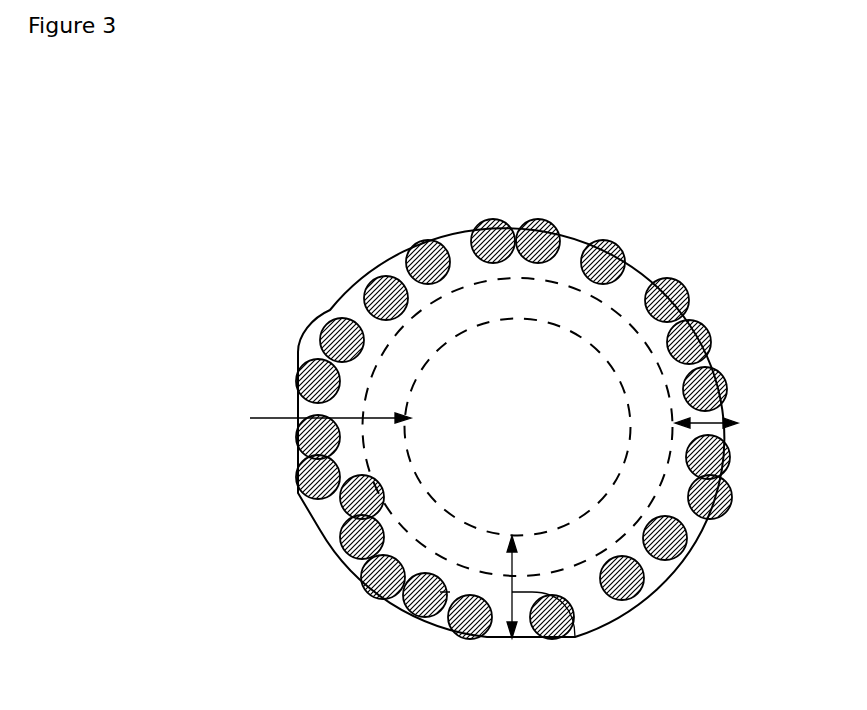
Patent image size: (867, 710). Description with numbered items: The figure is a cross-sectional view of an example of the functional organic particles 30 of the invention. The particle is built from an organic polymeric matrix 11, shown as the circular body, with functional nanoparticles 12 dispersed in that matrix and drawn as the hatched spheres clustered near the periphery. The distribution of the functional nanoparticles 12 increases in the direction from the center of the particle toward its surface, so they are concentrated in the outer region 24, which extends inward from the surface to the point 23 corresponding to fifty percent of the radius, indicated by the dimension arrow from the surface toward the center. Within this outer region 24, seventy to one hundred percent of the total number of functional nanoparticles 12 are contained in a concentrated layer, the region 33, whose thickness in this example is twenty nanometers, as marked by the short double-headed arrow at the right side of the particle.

The functional organic particles 30 is at (490, 374).
The organic polymeric matrix 11 is at (648, 260).
The functional nanoparticles 12 is at (300, 488).
The point corresponding to 50% of the radius 23 is at (304, 418).
The outer region 24 is at (574, 632).
The region comprising 70% to 100% of the functional nanoparticles 33 is at (718, 403).